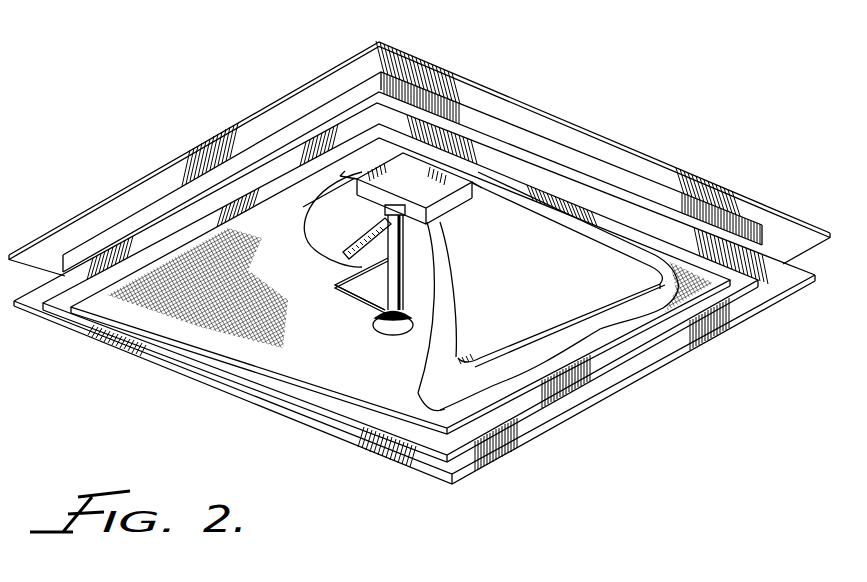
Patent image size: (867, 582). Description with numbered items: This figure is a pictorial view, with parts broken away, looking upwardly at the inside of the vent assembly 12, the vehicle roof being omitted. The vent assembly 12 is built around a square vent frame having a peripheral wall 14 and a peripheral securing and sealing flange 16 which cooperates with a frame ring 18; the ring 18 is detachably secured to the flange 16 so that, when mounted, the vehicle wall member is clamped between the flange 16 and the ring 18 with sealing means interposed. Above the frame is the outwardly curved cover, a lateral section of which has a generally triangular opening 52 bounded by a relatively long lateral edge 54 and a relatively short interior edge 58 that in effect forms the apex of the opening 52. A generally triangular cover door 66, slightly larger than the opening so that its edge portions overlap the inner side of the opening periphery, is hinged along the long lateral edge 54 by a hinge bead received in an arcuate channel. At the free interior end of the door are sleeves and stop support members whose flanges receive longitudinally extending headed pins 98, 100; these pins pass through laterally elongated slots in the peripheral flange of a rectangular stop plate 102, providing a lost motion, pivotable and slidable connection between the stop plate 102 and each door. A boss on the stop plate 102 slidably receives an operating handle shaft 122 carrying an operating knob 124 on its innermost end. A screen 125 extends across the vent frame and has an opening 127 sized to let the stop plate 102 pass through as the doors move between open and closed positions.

The vent assembly 12 is at (693, 147).
The peripheral wall 14 is at (548, 148).
The peripheral securing and sealing flange 16 is at (613, 144).
The frame ring 18 is at (747, 313).
The triangular opening 52 is at (450, 284).
The long lateral edge 54 is at (603, 283).
The short interior edge 58 is at (345, 213).
The cover door 66 is at (473, 318).
The headed pin 98 is at (406, 188).
The headed pin 100 is at (472, 190).
The stop plate 102 is at (343, 258).
The operating handle shaft 122 is at (375, 256).
The operating knob 124 is at (378, 329).
The screen 125 is at (200, 332).
The screen opening 127 is at (372, 305).